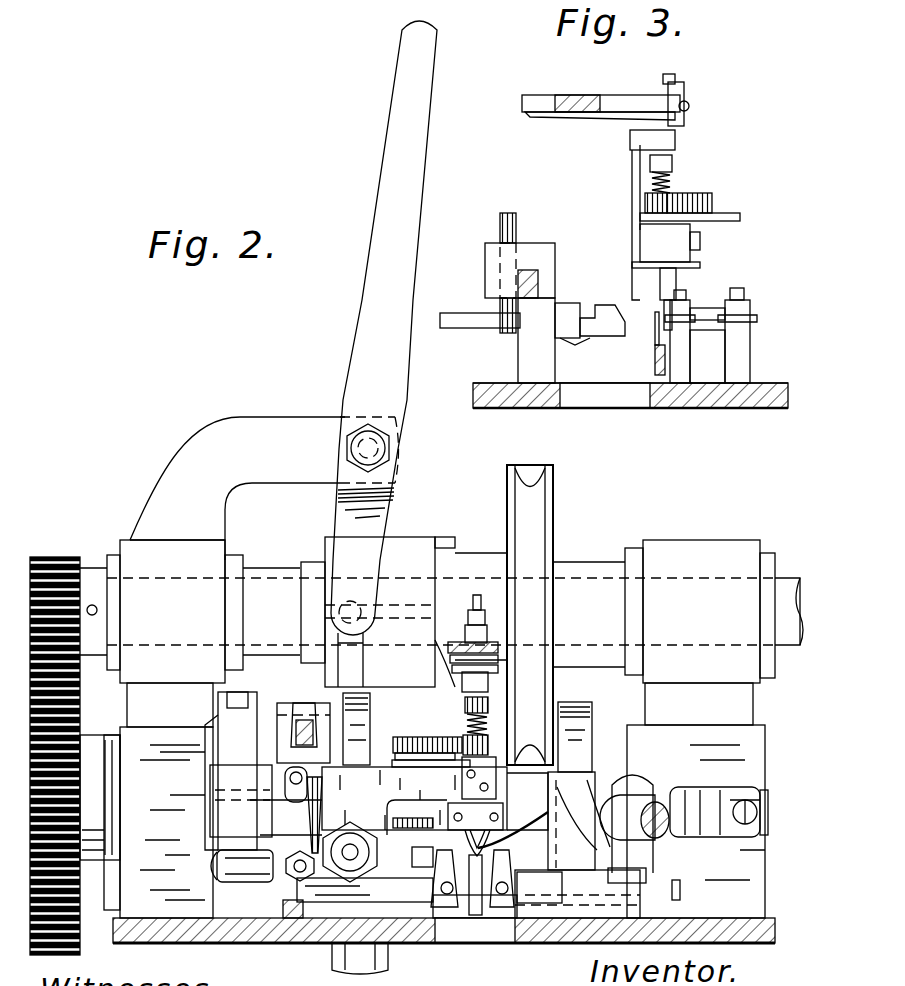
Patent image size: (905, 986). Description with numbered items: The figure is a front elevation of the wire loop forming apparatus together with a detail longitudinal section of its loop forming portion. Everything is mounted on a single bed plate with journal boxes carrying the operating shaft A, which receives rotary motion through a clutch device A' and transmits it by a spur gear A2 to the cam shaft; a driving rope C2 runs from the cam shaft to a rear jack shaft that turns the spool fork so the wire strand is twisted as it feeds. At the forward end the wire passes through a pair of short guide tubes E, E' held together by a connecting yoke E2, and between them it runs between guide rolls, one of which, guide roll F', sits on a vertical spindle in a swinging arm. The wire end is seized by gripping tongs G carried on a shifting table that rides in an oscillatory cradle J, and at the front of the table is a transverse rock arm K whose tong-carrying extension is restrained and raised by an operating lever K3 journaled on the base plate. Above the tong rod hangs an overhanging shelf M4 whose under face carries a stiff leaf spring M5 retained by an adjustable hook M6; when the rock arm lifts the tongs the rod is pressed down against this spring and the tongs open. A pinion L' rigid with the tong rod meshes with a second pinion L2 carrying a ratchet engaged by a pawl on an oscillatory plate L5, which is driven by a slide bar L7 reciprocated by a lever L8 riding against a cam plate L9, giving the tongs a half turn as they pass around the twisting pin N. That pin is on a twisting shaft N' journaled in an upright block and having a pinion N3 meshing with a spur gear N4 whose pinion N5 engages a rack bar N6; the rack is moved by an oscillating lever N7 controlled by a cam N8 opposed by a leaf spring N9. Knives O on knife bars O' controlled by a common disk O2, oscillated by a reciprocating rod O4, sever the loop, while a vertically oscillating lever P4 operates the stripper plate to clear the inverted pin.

In FIG. 2, the operating shaft A is at (441, 592).
In FIG. 2, the clutch device A' is at (378, 612).
In FIG. 2, the spur gear A2 is at (80, 560).
In FIG. 2, the driving rope C2 is at (108, 862).
In FIG. 3, the guide tube E is at (748, 326).
In FIG. 3, the guide tube E' is at (686, 327).
In FIG. 3, the connecting yoke E2 is at (752, 330).
In FIG. 2, the connecting yoke E2 is at (518, 830).
In FIG. 3, the guide roll F' is at (724, 281).
In FIG. 2, the guide roll F' is at (429, 884).
In FIG. 2, the gripping tongs G is at (460, 820).
In FIG. 2, the oscillatory cradle J is at (340, 935).
In FIG. 2, the rock arm K is at (399, 799).
In FIG. 2, the operating lever K3 is at (245, 740).
In FIG. 3, the pinion L' is at (672, 184).
In FIG. 2, the pinion L' is at (458, 713).
In FIG. 3, the second pinion L2 is at (712, 200).
In FIG. 2, the second pinion L2 is at (400, 740).
In FIG. 3, the oscillatory plate L5 is at (740, 218).
In FIG. 3, the slide bar L7 is at (700, 248).
In FIG. 2, the slide bar L7 is at (320, 785).
In FIG. 2, the lever L8 is at (283, 893).
In FIG. 2, the cam plate L9 is at (295, 920).
In FIG. 3, the overhanging shelf M4 is at (625, 95).
In FIG. 2, the overhanging shelf M4 is at (450, 648).
In FIG. 3, the leaf spring M5 is at (612, 116).
In FIG. 3, the adjustable hook M6 is at (688, 106).
In FIG. 3, the twisting pin N is at (590, 307).
In FIG. 3, the twisting shaft N' is at (480, 304).
In FIG. 3, the pinion N3 is at (500, 328).
In FIG. 3, the spur gear N4 is at (489, 220).
In FIG. 3, the pinion N5 is at (525, 250).
In FIG. 3, the rack bar N6 is at (538, 278).
In FIG. 2, the oscillating lever N7 is at (665, 790).
In FIG. 2, the cam N8 is at (590, 740).
In FIG. 2, the leaf spring N9 is at (668, 860).
In FIG. 3, the knife O is at (646, 343).
In FIG. 2, the knife O is at (477, 897).
In FIG. 2, the knife bar O' is at (660, 889).
In FIG. 2, the disk O2 is at (590, 870).
In FIG. 2, the reciprocating rod O4 is at (645, 855).
In FIG. 2, the vertically oscillating lever P4 is at (293, 700).